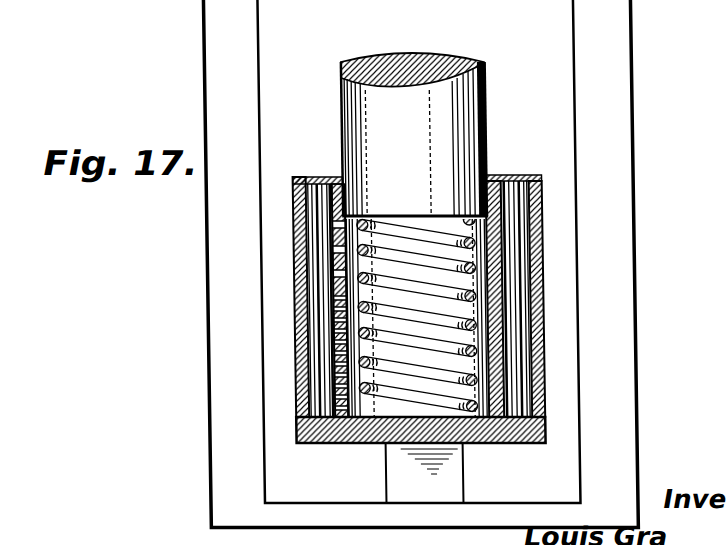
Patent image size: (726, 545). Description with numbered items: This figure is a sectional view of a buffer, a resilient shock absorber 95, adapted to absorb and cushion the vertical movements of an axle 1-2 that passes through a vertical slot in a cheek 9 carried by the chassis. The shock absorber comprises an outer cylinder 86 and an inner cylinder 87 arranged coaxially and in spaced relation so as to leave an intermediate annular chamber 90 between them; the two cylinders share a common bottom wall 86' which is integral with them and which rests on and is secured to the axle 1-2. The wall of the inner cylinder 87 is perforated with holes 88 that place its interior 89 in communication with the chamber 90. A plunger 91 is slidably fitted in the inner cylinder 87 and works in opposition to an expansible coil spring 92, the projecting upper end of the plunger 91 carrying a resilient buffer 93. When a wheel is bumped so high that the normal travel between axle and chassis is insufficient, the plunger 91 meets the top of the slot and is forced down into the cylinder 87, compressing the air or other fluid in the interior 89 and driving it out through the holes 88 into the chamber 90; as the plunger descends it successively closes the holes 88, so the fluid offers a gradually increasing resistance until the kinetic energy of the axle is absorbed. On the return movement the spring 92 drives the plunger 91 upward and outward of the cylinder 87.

The cheek 9 is at (610, 118).
The axle 1-2 is at (393, 470).
The outer cylinder 86 is at (436, 297).
The common bottom wall 86' is at (421, 446).
The inner cylinder 87 is at (503, 232).
The perforations 88 is at (334, 272).
The interior of inner cylinder 89 is at (477, 348).
The intermediate annular chamber 90 is at (312, 310).
The plunger 91 is at (357, 134).
The spring 92 is at (348, 228).
The resilient buffer 93 is at (421, 57).
The resilient shock absorber 95 is at (515, 175).